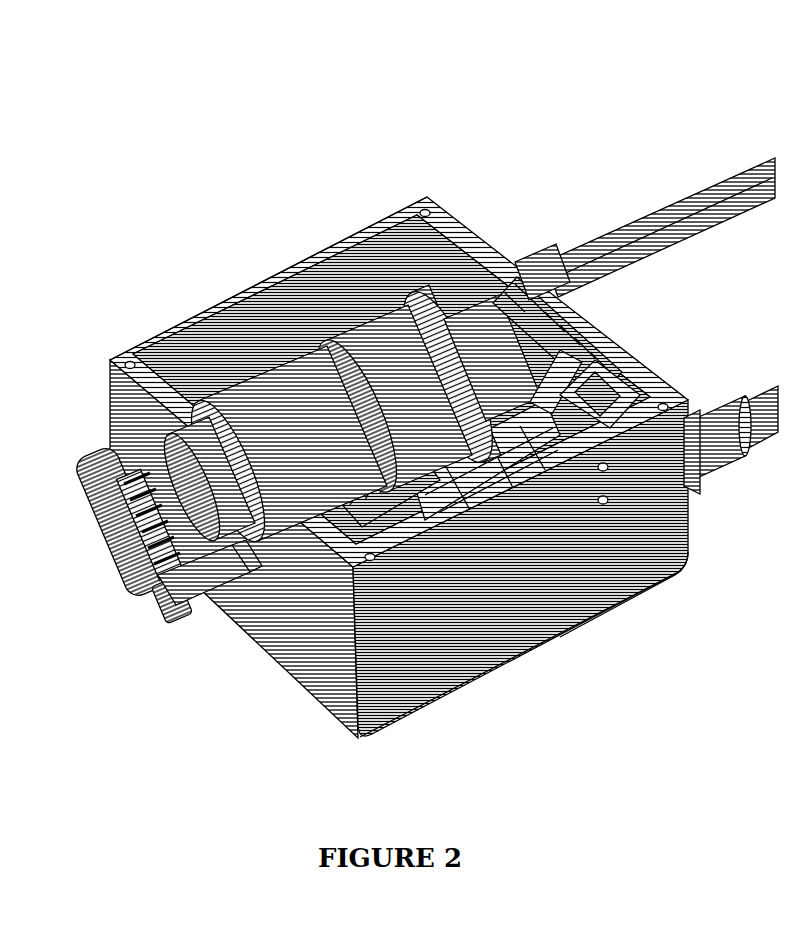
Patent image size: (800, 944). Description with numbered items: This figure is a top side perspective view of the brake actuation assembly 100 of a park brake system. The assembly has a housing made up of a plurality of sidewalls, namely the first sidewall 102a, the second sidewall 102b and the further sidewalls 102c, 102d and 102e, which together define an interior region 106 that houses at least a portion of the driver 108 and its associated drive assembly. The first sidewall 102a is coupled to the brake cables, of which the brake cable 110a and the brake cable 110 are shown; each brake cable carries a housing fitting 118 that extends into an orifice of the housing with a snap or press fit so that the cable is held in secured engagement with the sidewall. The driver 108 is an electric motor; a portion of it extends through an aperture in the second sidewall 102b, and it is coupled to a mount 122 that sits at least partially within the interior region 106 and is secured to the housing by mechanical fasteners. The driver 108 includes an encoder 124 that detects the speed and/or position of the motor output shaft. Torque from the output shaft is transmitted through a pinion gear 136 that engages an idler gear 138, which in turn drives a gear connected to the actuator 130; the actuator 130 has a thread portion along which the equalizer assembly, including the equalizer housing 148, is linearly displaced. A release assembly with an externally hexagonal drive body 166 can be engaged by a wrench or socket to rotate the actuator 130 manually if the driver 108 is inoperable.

The brake actuation assembly 100 is at (595, 132).
The first sidewall 102a is at (653, 367).
The second sidewall 102b is at (300, 647).
The sidewall 102c is at (549, 640).
The sidewall 102d is at (243, 292).
The sidewall 102e is at (463, 683).
The interior region 106 is at (293, 265).
The driver 108 is at (390, 367).
The brake cable 110 is at (743, 447).
The brake cable 110a is at (700, 200).
The housing fitting 118 is at (520, 258).
The mount 122 is at (357, 283).
The encoder 124 is at (100, 553).
The actuator 130 is at (247, 640).
The pinion gear 136 is at (547, 300).
The idler gear 138 is at (603, 353).
The equalizer housing 148 is at (610, 607).
The drive body 166 is at (197, 622).